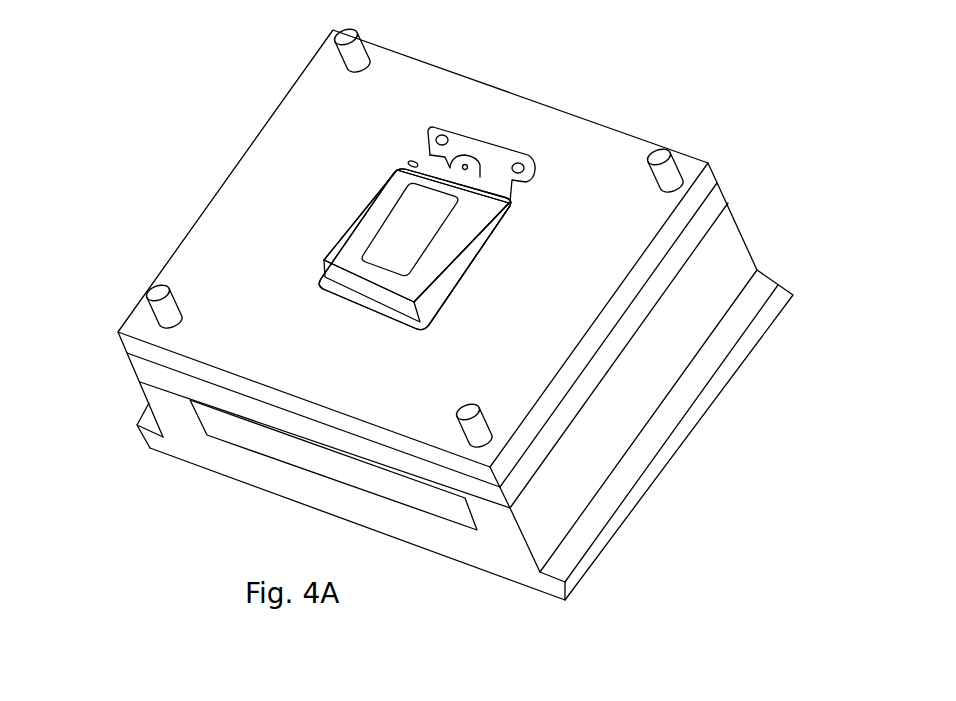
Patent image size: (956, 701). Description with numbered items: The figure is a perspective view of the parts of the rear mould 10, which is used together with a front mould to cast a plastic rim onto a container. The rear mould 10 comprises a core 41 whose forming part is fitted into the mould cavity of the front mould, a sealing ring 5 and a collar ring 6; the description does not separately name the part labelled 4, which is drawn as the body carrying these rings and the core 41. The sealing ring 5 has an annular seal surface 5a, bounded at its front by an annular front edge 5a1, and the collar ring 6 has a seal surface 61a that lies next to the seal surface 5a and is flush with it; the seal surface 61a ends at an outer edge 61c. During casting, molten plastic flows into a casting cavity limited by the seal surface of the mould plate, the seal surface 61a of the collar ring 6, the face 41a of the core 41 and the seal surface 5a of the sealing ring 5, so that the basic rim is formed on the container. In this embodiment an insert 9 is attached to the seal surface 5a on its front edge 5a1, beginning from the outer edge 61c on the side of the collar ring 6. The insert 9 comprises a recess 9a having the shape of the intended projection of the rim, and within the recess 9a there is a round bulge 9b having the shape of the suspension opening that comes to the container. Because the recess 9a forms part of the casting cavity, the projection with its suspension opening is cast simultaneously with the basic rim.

The rear mould 10 is at (695, 92).
The sealing ring 5 is at (147, 352).
The seal surface 5a is at (528, 285).
The front edge 5a1 is at (513, 203).
The frame 4 is at (520, 483).
The core 41 is at (362, 237).
The face of the core 41a is at (492, 237).
The collar ring 6 is at (318, 280).
The seal surface of the collar ring 61a is at (318, 280).
The outer edge 61c is at (413, 163).
The insert 9 is at (482, 148).
The recess 9a is at (440, 127).
The round bulge 9b is at (505, 157).